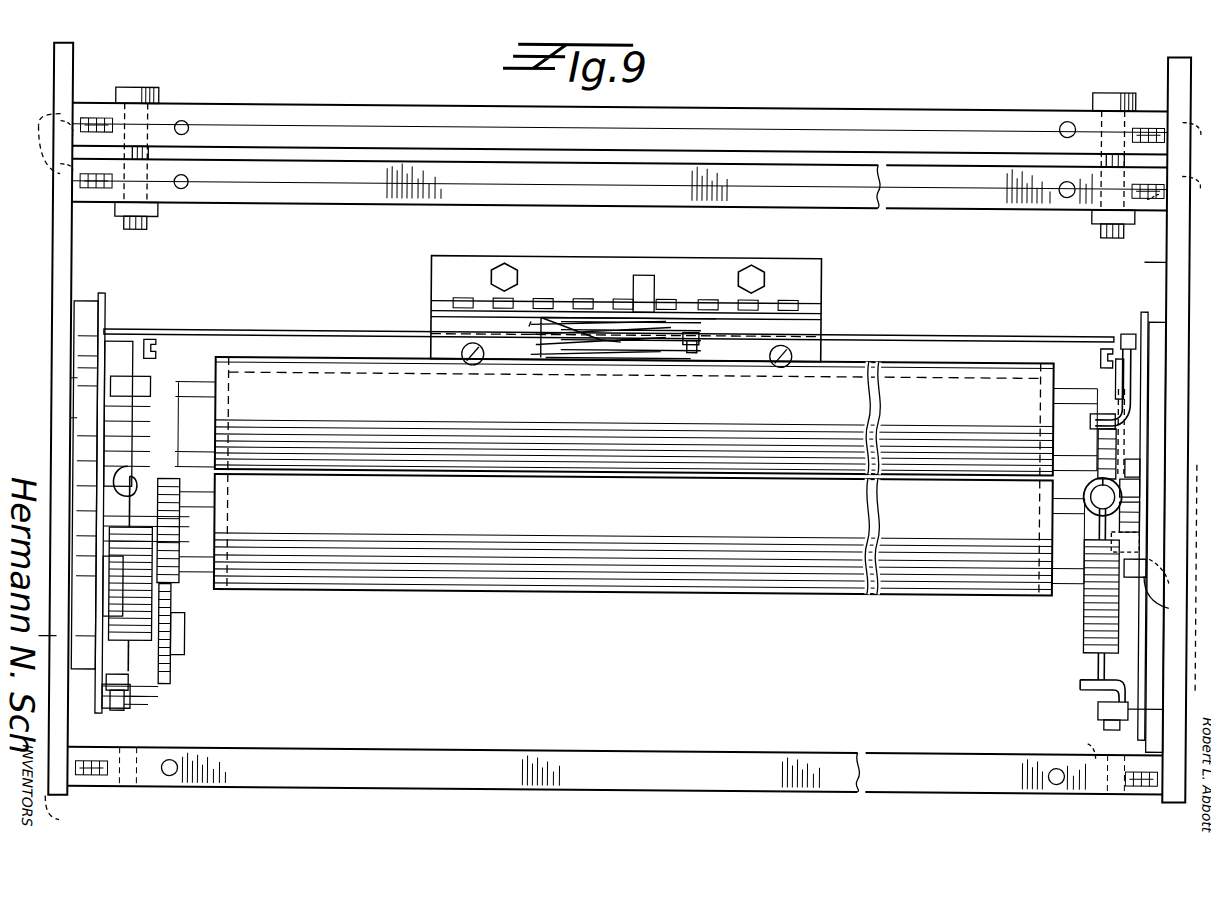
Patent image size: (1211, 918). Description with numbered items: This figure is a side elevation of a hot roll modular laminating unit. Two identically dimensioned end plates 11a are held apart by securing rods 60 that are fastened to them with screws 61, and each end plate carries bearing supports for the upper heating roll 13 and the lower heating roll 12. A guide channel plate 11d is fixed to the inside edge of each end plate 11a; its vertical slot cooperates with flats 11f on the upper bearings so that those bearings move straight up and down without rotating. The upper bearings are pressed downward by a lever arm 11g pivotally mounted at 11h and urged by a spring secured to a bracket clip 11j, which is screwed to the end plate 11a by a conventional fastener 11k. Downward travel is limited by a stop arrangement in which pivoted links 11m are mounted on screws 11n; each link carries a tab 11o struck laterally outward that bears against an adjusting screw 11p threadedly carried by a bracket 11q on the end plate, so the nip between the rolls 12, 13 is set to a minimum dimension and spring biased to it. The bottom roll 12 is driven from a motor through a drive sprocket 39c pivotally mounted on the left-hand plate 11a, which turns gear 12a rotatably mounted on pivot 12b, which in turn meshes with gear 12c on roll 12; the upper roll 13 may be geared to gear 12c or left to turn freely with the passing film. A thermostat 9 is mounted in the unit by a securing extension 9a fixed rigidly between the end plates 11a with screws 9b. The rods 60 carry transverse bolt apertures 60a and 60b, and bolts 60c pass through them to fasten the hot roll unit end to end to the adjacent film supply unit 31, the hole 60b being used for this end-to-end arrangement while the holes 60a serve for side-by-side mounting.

The thermostat 9 is at (600, 320).
The securing extension 9a is at (268, 315).
The screws 9b is at (148, 343).
The end plates 11a is at (35, 640).
The guide channel plate 11d is at (1145, 345).
The flats 11f is at (1180, 578).
The lever arm 11g is at (1142, 316).
The pivot 11h is at (1123, 346).
The bracket clips 11j is at (1082, 681).
The fastener 11k is at (118, 712).
The pivoted links 11m is at (1108, 472).
The screws 11n is at (1140, 464).
The tab 11o is at (1140, 495).
The adjusting screw 11p is at (1142, 538).
The brackets 11q is at (1172, 610).
The lower heating roll 12 is at (530, 516).
The gear 12a is at (170, 684).
The pivot 12b is at (186, 632).
The gear 12c is at (180, 516).
The upper heating roll 13 is at (540, 405).
The film supply unit 31 is at (1156, 71).
The drive sprocket 39c is at (130, 696).
The securing rods 60 is at (320, 110).
The transverse bolt apertures 60a is at (186, 131).
The bolt aperture 60b is at (1107, 467).
The bolts 60c is at (157, 212).
The screws 61 is at (42, 124).